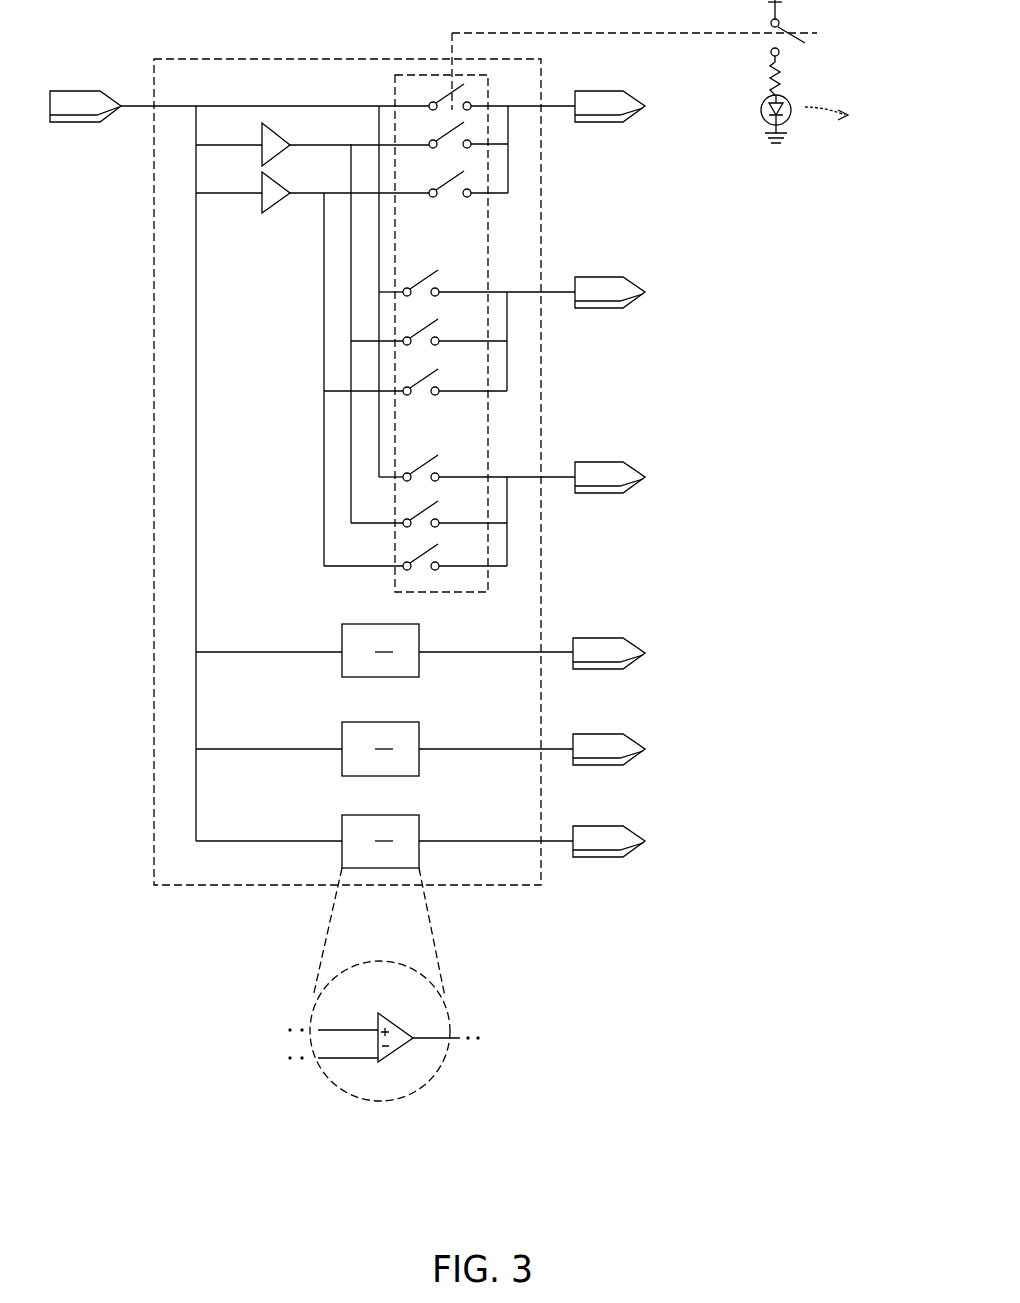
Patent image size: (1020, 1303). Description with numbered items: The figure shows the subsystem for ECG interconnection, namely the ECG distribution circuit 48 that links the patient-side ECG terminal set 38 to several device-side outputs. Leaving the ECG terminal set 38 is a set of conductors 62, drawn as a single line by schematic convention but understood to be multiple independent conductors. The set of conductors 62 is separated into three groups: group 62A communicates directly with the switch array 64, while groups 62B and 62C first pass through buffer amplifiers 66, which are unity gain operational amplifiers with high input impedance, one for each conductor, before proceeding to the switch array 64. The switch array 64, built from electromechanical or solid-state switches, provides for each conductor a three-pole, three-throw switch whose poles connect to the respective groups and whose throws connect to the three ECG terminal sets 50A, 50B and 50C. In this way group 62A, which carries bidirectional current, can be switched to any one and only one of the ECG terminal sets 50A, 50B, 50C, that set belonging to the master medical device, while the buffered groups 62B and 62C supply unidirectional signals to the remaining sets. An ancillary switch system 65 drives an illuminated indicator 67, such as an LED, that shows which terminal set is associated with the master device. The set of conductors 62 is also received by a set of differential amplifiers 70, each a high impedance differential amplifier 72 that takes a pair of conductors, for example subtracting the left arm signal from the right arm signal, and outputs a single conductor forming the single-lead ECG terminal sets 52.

The ECG terminal set 38 is at (85, 122).
The ECG distribution circuit 48 is at (155, 530).
The ECG terminal set 50A is at (612, 112).
The ECG terminal set 50B is at (598, 298).
The ECG terminal set 50C is at (605, 483).
The single-lead ECG terminal sets 52 is at (669, 655).
The set of conductors 62 is at (175, 103).
The group of conductors 62A is at (291, 103).
The group of conductors 62B is at (230, 143).
The group of conductors 62C is at (222, 193).
The switch array 64 is at (417, 75).
The ancillary switch system 65 is at (803, 66).
The buffer amplifiers 66 is at (262, 152).
The illuminated indicator 67 is at (808, 138).
The differential amplifiers 70 is at (342, 815).
The differential amplifier 72 is at (407, 1043).